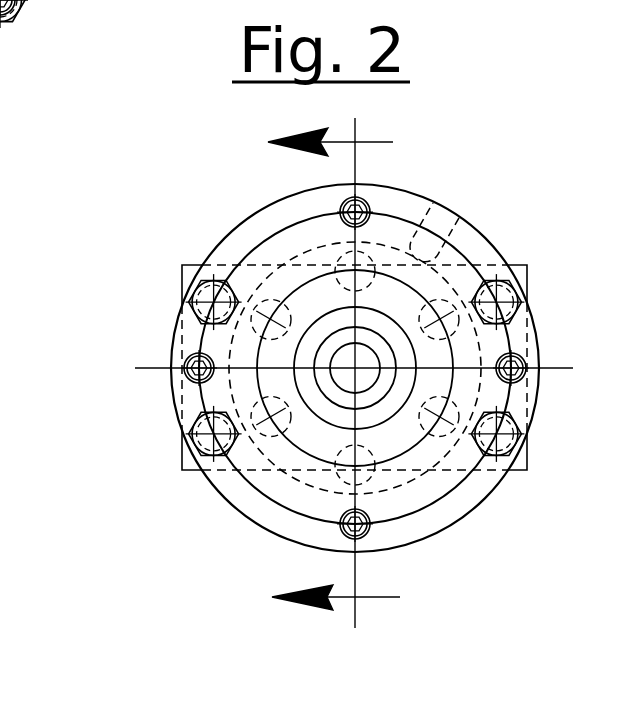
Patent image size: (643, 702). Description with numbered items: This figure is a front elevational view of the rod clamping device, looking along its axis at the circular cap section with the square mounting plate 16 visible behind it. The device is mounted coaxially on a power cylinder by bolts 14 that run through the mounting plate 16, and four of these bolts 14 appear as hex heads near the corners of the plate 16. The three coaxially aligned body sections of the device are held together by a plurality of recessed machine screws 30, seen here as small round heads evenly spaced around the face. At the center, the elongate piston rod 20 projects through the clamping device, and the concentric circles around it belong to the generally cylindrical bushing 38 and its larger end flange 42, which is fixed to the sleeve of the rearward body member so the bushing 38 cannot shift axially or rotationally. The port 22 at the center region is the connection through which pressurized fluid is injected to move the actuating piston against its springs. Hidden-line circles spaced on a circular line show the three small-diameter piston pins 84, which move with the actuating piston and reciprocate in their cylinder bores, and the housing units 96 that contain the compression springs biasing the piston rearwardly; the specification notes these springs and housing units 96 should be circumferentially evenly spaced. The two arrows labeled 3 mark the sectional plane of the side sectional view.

The section line 3 is at (347, 370).
The bolts 14 is at (188, 302).
The mounting plate 16 is at (527, 267).
The piston rod 20 is at (340, 354).
The port 22 is at (355, 368).
The recessed machine screws 30 is at (192, 380).
The bushing 38 is at (343, 400).
The end flange 42 is at (355, 368).
The piston pins 84 is at (268, 316).
The housing units 96 is at (297, 403).